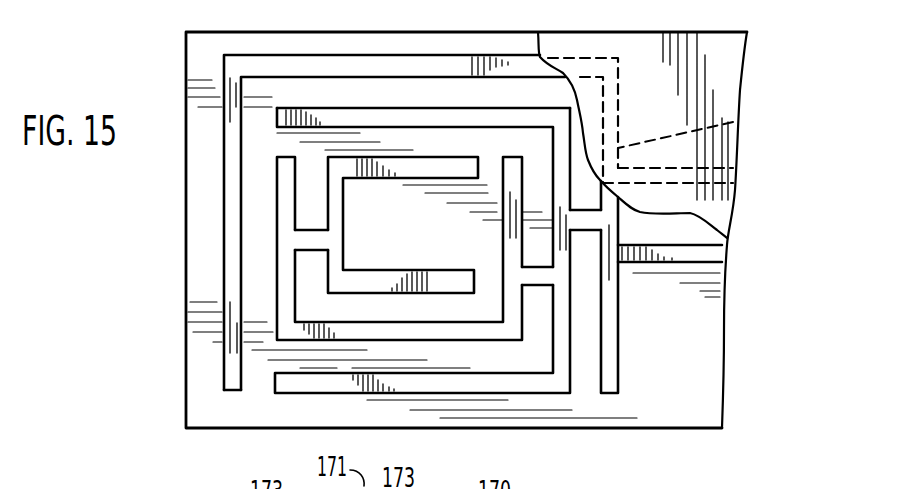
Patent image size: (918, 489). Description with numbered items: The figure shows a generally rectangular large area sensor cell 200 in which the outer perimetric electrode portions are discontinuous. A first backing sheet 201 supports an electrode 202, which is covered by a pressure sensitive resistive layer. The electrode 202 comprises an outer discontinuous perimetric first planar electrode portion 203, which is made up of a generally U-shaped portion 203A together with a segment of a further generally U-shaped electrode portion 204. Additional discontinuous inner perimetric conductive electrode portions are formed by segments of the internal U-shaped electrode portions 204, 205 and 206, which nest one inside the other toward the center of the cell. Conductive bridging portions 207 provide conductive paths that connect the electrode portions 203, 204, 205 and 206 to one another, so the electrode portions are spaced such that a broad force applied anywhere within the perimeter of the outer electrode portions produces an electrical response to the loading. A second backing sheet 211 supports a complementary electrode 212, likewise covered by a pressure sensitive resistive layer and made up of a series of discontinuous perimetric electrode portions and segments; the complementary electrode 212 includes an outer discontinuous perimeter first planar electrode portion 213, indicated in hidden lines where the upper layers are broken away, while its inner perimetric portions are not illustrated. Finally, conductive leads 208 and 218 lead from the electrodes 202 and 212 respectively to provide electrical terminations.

The sensor cell 200 is at (162, 47).
The first backing sheet 201 is at (681, 428).
The electrode 202 is at (633, 362).
The outer discontinuous perimetric first planar electrode portion 203 is at (270, 66).
The generally U-shaped portion 203A is at (230, 366).
The further generally U-shaped electrode portion 204 is at (355, 97).
The internal U-shaped electrode portion 205 is at (266, 280).
The internal U-shaped electrode portion 206 is at (435, 147).
The bridging portions 207 is at (316, 228).
The conductive lead 208 is at (680, 255).
The second backing sheet 211 is at (697, 122).
The complementary electrode 212 is at (632, 85).
The outer discontinuous perimeter first planar electrode portion 213 is at (733, 122).
The conductive lead 218 is at (733, 179).